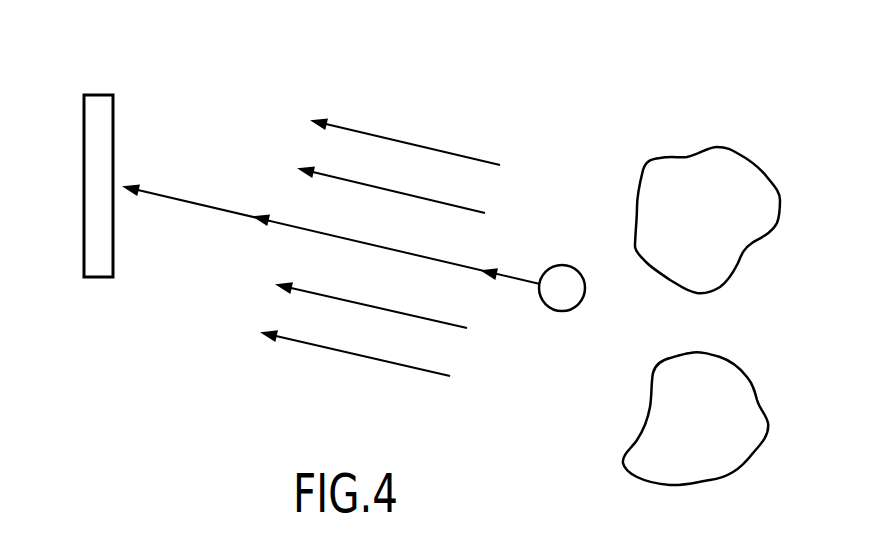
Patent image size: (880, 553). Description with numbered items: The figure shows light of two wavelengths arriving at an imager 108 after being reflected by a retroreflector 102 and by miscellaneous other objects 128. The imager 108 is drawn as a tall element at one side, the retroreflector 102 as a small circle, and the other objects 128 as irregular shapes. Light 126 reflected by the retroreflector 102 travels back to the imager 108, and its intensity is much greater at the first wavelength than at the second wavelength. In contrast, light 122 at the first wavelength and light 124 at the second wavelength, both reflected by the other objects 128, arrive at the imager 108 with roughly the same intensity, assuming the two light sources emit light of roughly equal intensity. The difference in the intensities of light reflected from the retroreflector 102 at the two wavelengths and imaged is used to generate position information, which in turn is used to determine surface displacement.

The imager 108 is at (100, 95).
The retroreflector 102 is at (561, 265).
The light reflected by the retroreflector 126 is at (510, 277).
The light reflected by other objects 122 is at (394, 136).
The light reflected by other objects 124 is at (378, 187).
The other objects 128 is at (679, 260).